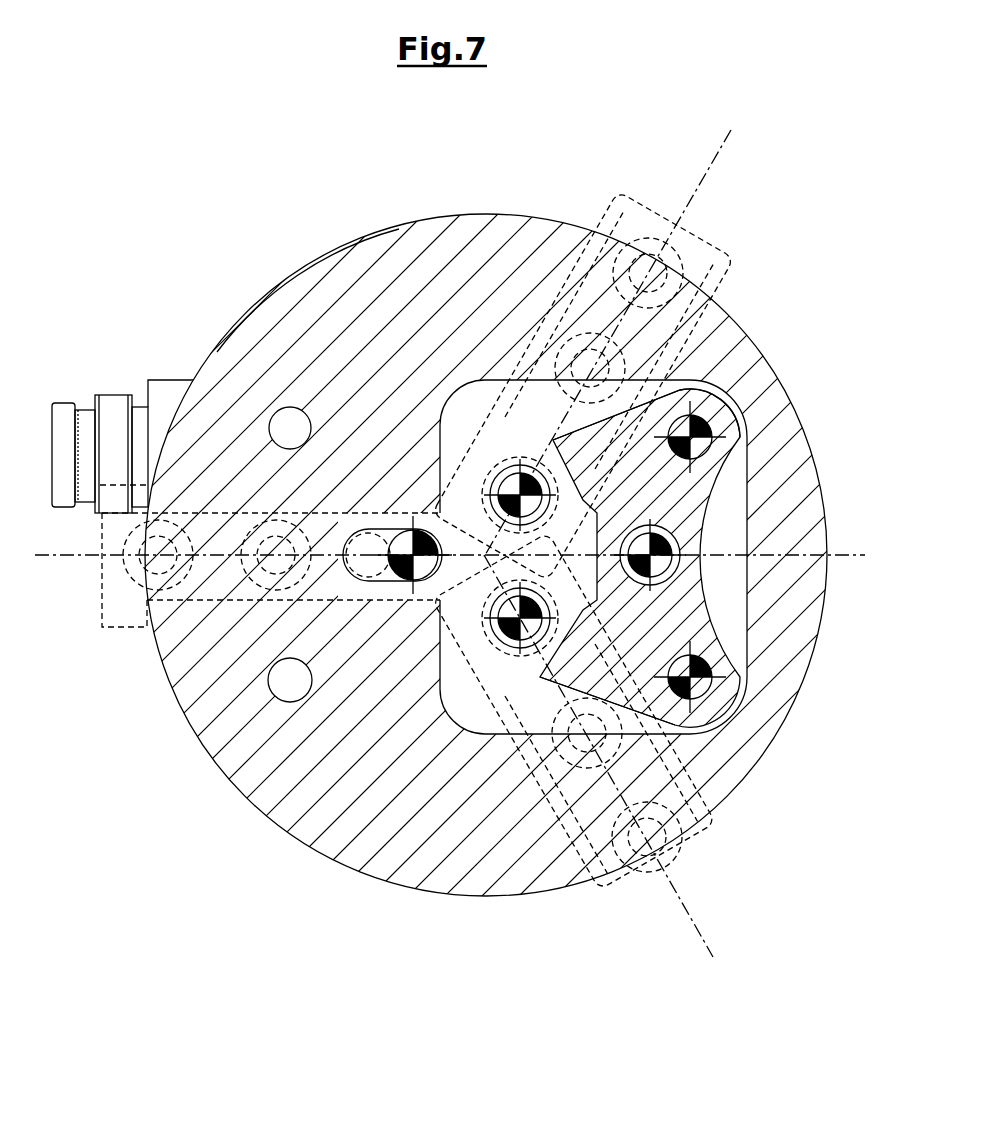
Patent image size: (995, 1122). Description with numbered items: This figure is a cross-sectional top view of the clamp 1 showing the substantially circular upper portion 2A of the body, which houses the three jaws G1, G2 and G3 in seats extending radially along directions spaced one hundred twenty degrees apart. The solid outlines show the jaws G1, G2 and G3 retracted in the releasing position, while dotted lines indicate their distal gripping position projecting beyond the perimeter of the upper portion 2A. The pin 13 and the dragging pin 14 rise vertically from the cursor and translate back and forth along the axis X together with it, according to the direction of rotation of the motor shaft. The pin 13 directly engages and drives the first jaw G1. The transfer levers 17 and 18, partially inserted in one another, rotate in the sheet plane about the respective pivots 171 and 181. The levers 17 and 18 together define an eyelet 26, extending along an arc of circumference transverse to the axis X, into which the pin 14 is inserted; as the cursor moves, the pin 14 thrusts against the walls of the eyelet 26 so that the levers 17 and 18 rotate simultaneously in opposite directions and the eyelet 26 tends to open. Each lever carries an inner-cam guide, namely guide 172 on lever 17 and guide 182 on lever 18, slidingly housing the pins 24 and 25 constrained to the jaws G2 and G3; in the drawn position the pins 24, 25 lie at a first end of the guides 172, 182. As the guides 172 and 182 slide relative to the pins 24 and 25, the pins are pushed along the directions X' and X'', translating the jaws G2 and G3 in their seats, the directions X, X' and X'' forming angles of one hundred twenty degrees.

The clamp 1 is at (218, 193).
The upper portion 2A is at (411, 220).
The pin 13 is at (400, 578).
The dragging pin 14 is at (676, 543).
The transfer lever 17 is at (693, 595).
The pivot 171 is at (708, 682).
The guide 172 is at (583, 610).
The transfer lever 18 is at (725, 410).
The pivot 181 is at (707, 442).
The guide 182 is at (680, 390).
The pin 24 is at (508, 640).
The pin 25 is at (520, 473).
The eyelet 26 is at (688, 555).
The first jaw G1 is at (118, 615).
The second jaw G2 is at (618, 905).
The third jaw G3 is at (613, 215).
The axis X- X is at (450, 580).
The direction X' is at (613, 756).
The direction X'' is at (629, 343).